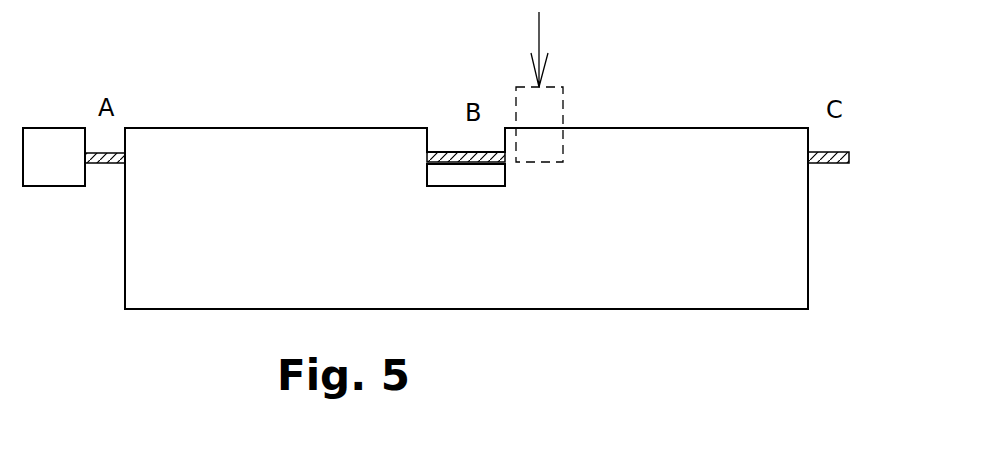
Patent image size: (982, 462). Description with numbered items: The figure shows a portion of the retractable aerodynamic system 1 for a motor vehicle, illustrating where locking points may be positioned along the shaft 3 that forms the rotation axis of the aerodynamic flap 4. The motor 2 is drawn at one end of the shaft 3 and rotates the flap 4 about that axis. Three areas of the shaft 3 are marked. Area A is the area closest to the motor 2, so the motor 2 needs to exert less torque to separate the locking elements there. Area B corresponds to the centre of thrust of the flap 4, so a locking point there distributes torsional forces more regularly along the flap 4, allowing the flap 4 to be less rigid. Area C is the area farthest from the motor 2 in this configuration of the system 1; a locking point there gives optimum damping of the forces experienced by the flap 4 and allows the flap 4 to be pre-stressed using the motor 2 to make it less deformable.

The retractable aerodynamic system 1 is at (186, 350).
The motor 2 is at (47, 112).
The shaft 3 is at (106, 172).
The aerodynamic flap 4 is at (690, 266).